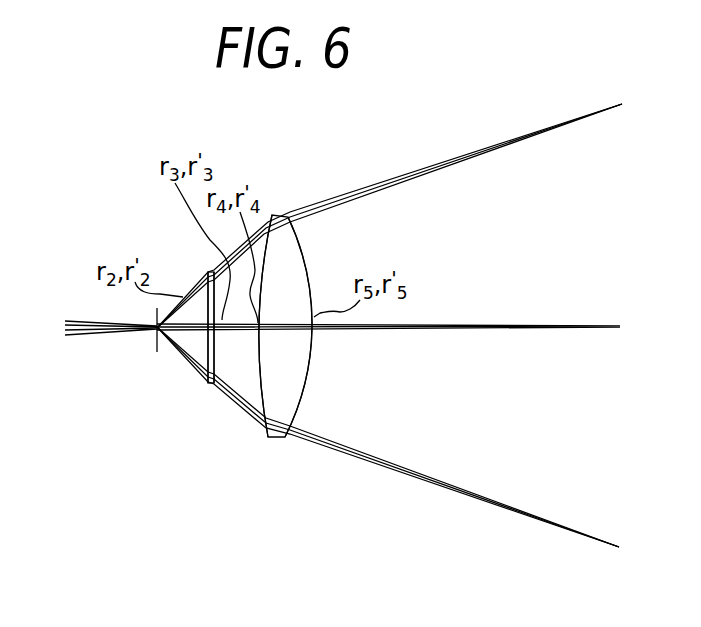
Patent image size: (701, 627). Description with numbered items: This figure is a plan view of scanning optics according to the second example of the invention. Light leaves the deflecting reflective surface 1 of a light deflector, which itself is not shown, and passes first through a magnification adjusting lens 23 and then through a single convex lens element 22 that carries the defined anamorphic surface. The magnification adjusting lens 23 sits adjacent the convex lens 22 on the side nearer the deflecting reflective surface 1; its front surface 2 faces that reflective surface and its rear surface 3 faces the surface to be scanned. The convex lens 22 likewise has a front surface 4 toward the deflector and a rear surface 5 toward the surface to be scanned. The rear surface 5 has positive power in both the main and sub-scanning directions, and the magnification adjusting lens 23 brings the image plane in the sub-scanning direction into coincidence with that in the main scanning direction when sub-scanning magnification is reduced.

The deflecting reflective surface 1 is at (147, 337).
The front surface of the magnification adjusting lens 2 is at (203, 343).
The rear surface of the magnification adjusting lens 3 is at (224, 327).
The front surface of the convex lens 4 is at (255, 326).
The rear surface of the convex lens 5 is at (309, 327).
The convex lens element 22 is at (302, 270).
The magnification adjusting lens 23 is at (207, 316).